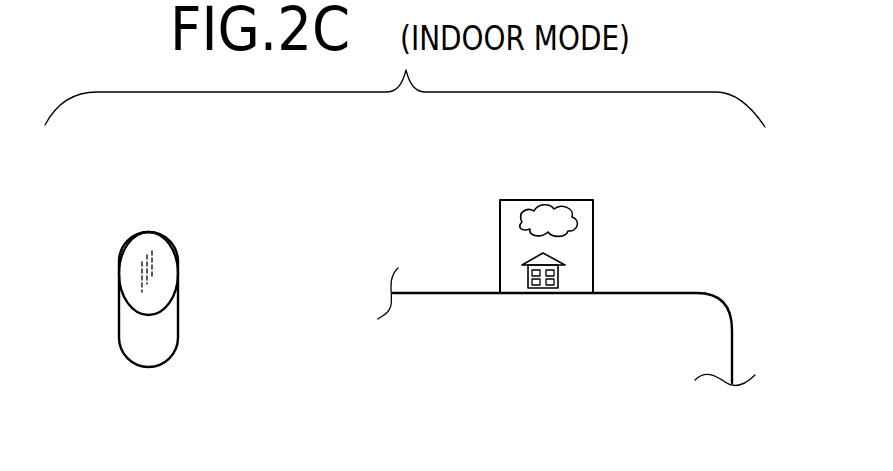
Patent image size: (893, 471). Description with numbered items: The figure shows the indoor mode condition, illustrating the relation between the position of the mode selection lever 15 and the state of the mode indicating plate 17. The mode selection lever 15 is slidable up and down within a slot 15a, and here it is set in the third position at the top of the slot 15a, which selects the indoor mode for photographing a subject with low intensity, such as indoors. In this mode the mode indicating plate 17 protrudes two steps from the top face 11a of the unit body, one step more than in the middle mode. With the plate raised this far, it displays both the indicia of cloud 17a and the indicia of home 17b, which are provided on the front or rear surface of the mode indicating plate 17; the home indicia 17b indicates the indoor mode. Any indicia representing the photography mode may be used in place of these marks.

The top face 11a is at (465, 293).
The mode selection lever 15 is at (166, 255).
The slot 15a is at (178, 338).
The mode indicating plate 17 is at (508, 200).
The indicia of cloud 17a is at (553, 207).
The indicia of home 17b is at (555, 260).